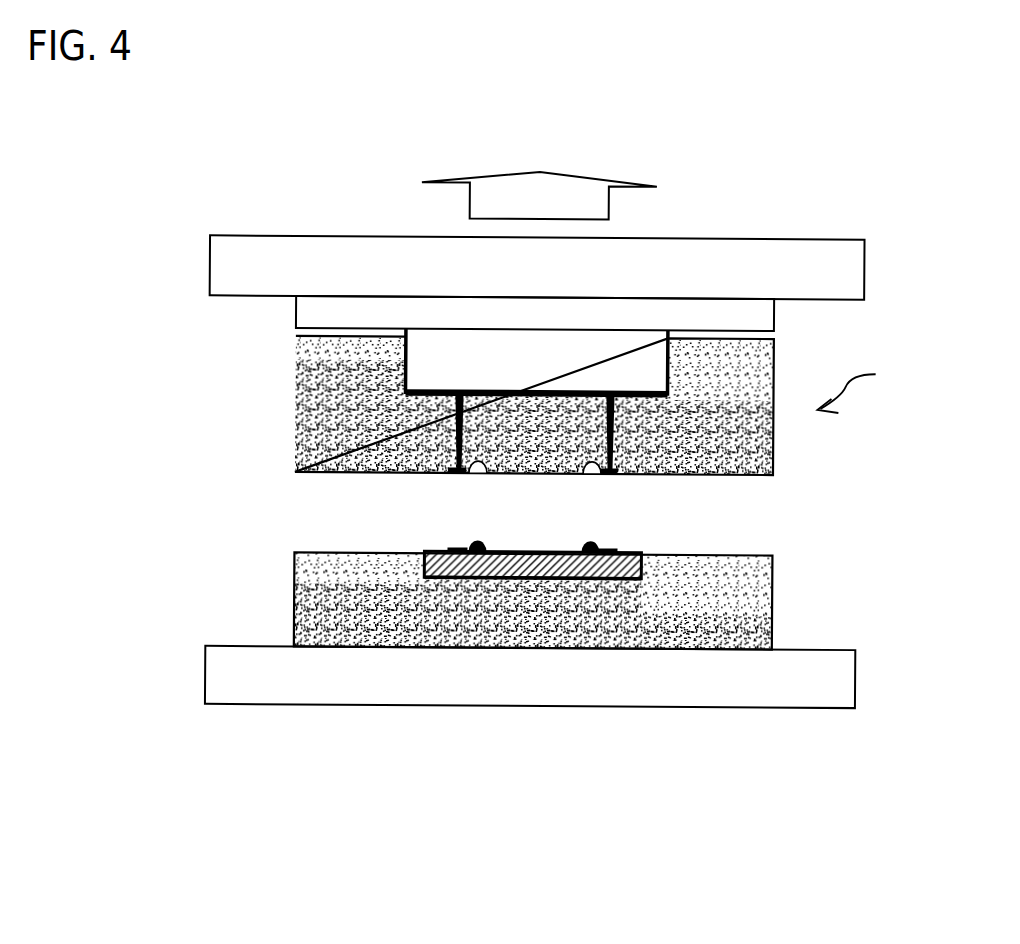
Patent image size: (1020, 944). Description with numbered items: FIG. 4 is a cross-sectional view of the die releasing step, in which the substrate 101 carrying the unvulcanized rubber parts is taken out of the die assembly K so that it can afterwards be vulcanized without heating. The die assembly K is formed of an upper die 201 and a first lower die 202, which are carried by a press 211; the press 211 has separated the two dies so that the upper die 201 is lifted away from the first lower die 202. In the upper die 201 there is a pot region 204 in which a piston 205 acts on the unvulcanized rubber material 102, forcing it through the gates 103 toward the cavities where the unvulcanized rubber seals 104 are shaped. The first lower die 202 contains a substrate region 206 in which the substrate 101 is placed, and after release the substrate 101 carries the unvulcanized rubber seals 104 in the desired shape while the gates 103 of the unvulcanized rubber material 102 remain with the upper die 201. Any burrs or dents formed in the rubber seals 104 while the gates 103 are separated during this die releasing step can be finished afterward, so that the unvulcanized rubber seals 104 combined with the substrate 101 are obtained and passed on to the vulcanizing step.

The substrate 101 is at (520, 578).
The unvulcanized rubber material 102 is at (493, 390).
The gates 103 is at (455, 455).
The unvulcanized rubber seals 104 is at (425, 560).
The upper die 201 is at (697, 448).
The first lower die 202 is at (717, 590).
The pot region 204 is at (405, 363).
The piston 205 is at (427, 345).
The substrate region 206 is at (440, 578).
The press 211 is at (653, 288).
The die assembly K is at (863, 388).